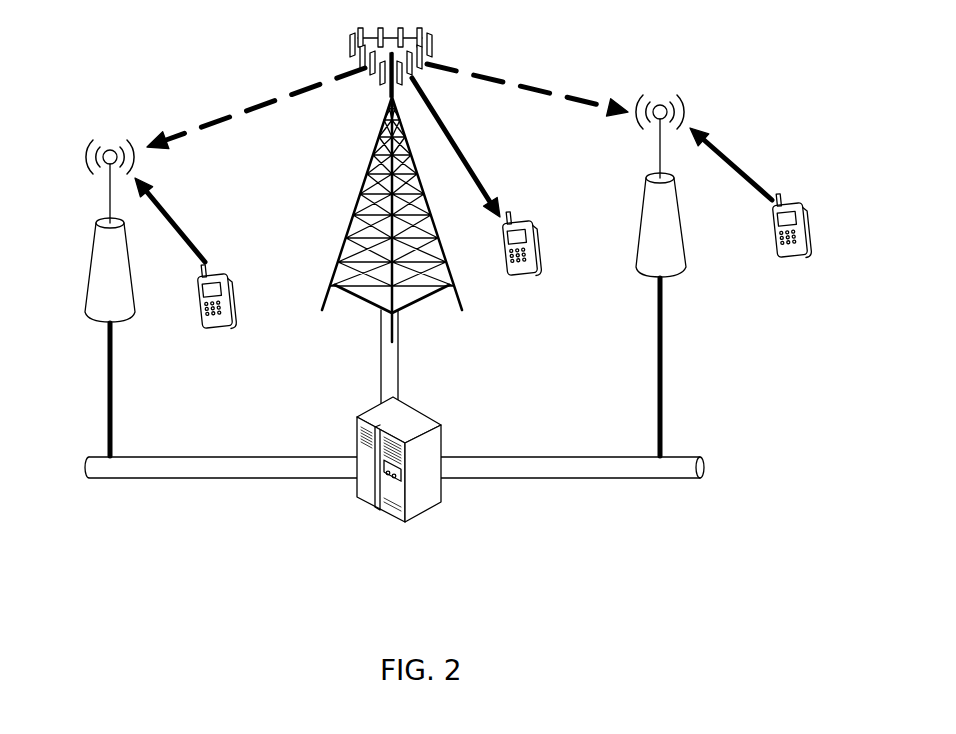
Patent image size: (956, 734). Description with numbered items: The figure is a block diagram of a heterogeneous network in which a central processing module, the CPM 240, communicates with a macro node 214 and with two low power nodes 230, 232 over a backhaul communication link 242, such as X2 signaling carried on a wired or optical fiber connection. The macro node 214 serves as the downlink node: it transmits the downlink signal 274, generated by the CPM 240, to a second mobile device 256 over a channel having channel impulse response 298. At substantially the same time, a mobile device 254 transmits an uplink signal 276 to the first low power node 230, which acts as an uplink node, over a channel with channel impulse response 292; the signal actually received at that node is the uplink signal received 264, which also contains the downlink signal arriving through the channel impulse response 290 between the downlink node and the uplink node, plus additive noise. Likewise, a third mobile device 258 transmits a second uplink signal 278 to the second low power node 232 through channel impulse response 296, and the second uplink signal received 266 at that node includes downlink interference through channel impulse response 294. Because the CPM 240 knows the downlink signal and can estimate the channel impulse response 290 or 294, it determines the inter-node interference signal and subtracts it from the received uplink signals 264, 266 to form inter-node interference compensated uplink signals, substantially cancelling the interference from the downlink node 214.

The macro node 214 is at (370, 173).
The low power node 230 is at (85, 293).
The low power node 232 is at (687, 253).
The CPM 240 is at (420, 522).
The backhaul communication link 242 is at (112, 385).
The mobile device 254 is at (210, 328).
The second mobile device 256 is at (516, 274).
The third mobile device 258 is at (786, 258).
The uplink signal received 264 is at (136, 108).
The second uplink signal received 266 is at (664, 67).
The downlink signal 274 is at (455, 30).
The uplink signal 276 is at (232, 251).
The second uplink signal 278 is at (824, 189).
The channel impulse response 290 is at (256, 105).
The channel impulse response 292 is at (182, 213).
The channel impulse response 294 is at (527, 78).
The channel impulse response 296 is at (742, 162).
The channel impulse response 298 is at (480, 147).